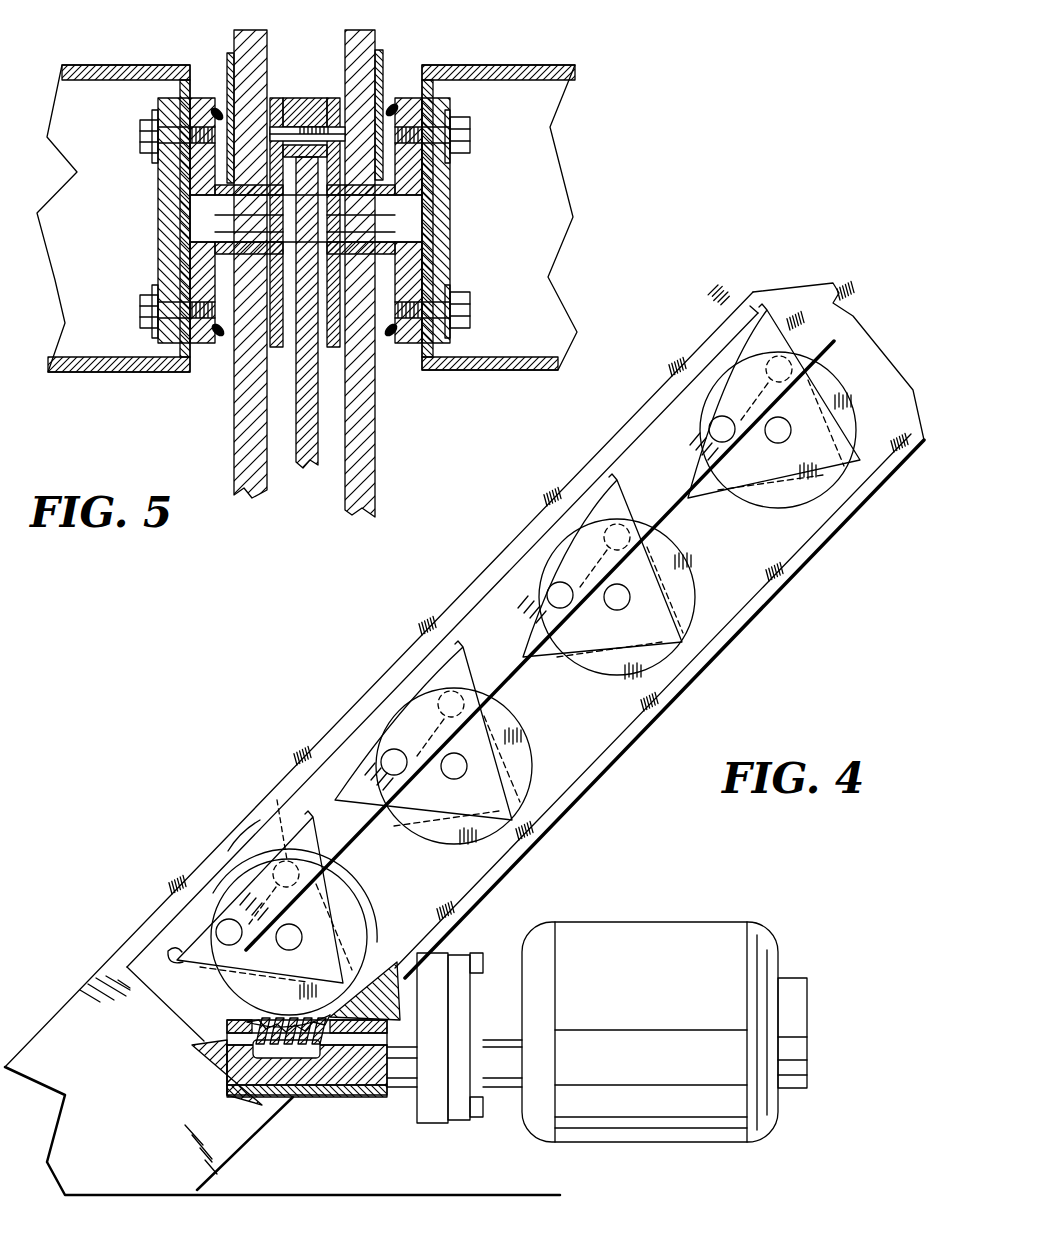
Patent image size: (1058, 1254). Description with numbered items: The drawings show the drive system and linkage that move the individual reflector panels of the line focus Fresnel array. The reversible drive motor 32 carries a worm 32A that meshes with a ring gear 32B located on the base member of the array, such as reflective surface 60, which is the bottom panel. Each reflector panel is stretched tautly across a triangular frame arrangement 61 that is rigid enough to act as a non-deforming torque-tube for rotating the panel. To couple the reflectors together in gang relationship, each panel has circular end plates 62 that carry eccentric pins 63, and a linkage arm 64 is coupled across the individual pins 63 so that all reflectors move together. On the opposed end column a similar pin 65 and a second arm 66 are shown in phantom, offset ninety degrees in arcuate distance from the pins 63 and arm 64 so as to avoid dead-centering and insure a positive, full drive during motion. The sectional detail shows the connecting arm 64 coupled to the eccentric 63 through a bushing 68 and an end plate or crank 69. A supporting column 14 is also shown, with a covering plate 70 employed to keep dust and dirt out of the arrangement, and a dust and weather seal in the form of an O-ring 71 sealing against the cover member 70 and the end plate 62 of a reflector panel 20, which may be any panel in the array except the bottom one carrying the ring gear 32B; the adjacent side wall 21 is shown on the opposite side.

In FIG. 5, the supporting column 14 is at (380, 452).
In FIG. 5, the reflector panel 20 is at (497, 58).
In FIG. 5, the side wall channel 21 is at (82, 60).
In FIG. 4, the reversible drive motor 32 is at (633, 920).
In FIG. 4, the worm 32A is at (300, 1048).
In FIG. 4, the ring gear 32B is at (375, 958).
In FIG. 4, the reflective surface 60 is at (171, 966).
In FIG. 4, the triangular frame arrangement 61 is at (760, 505).
In FIG. 5, the circular end plate 62 is at (410, 345).
In FIG. 4, the circular end plate 62 is at (430, 690).
In FIG. 5, the eccentric pin 63 is at (316, 128).
In FIG. 4, the eccentric pin 63 is at (718, 425).
In FIG. 5, the linkage arm 64 is at (307, 465).
In FIG. 4, the linkage arm 64 is at (500, 622).
In FIG. 4, the eccentric pin 65 is at (277, 800).
In FIG. 4, the second arm 66 is at (238, 847).
In FIG. 5, the bushing 68 is at (300, 127).
In FIG. 5, the end plate or crank 69 is at (277, 97).
In FIG. 5, the covering plate 70 is at (383, 57).
In FIG. 5, the O-ring 71 is at (394, 103).